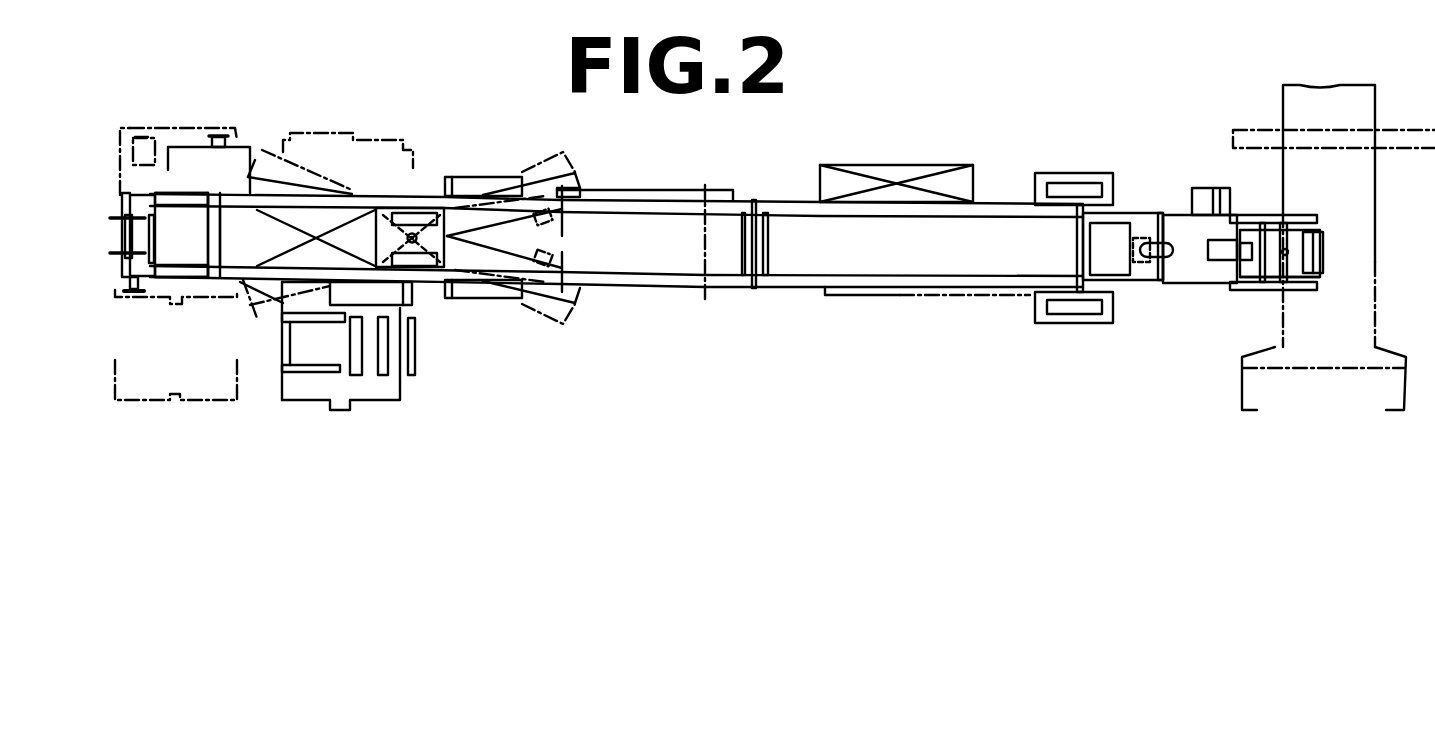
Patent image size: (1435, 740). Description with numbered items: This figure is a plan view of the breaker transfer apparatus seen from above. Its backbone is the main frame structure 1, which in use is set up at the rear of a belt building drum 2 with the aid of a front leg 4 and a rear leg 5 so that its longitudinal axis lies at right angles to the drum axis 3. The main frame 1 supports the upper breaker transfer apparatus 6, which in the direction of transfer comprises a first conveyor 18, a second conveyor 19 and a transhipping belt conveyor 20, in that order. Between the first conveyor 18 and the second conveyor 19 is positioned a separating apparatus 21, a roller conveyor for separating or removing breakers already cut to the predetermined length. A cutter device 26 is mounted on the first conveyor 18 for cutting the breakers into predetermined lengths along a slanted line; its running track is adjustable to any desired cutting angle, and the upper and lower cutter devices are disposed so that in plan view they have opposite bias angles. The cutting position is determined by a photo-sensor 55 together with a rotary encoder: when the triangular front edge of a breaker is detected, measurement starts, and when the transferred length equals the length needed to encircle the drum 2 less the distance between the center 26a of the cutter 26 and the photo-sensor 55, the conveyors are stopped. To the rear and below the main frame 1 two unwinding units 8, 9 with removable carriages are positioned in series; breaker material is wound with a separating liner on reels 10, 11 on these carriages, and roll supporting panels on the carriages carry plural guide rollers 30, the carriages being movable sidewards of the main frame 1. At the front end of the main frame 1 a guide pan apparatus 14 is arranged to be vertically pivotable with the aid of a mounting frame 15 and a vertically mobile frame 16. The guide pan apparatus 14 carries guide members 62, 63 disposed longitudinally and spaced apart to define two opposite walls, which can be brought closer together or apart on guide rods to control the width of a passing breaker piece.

The main frame structure 1 is at (654, 290).
The belt building drum 2 is at (1373, 283).
The drum axis 3 is at (1333, 97).
The front leg 4 is at (1062, 190).
The rear leg 5 is at (493, 180).
The upper breaker transfer apparatus 6 is at (790, 240).
The unwinding unit 8 is at (125, 140).
The unwinding unit 9 is at (340, 131).
The reel 10 is at (130, 192).
The reel 11 is at (315, 372).
The guide pan apparatus 14 is at (1305, 214).
The mounting frame 15 is at (1123, 212).
The vertically mobile frame 16 is at (1180, 225).
The first conveyor 18 is at (237, 222).
The second conveyor 19 is at (920, 230).
The transhipping belt conveyor 20 is at (1120, 255).
The separating apparatus 21 is at (615, 240).
The cutter device 26 is at (357, 227).
The center of the breaker cutter 26a is at (414, 235).
The guide roller 30 is at (416, 342).
The photo-sensor 55 is at (700, 282).
The guide member 62 is at (1280, 215).
The guide member 63 is at (1263, 290).